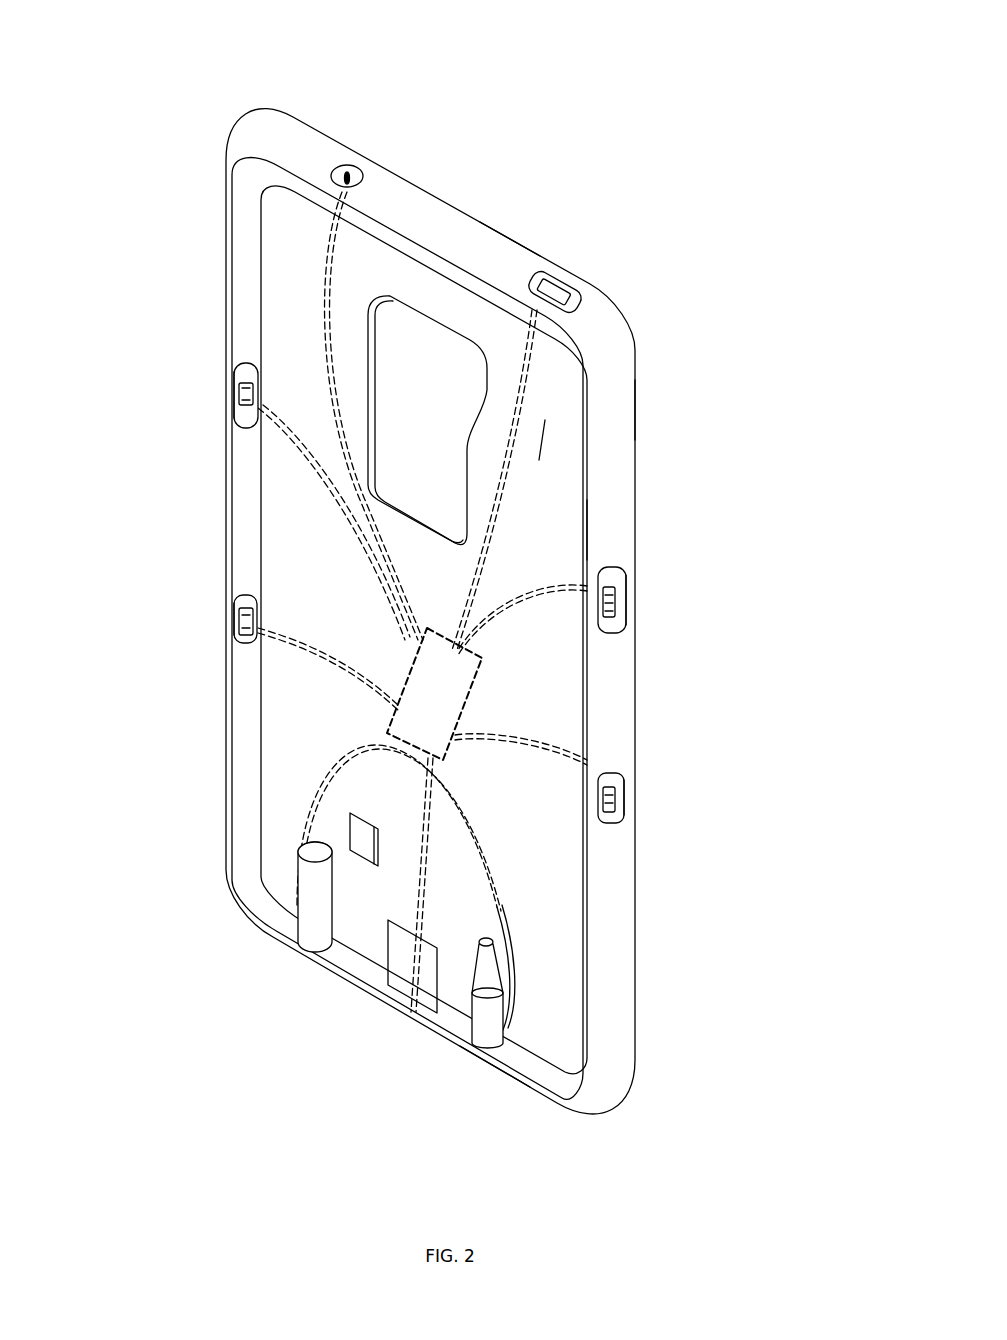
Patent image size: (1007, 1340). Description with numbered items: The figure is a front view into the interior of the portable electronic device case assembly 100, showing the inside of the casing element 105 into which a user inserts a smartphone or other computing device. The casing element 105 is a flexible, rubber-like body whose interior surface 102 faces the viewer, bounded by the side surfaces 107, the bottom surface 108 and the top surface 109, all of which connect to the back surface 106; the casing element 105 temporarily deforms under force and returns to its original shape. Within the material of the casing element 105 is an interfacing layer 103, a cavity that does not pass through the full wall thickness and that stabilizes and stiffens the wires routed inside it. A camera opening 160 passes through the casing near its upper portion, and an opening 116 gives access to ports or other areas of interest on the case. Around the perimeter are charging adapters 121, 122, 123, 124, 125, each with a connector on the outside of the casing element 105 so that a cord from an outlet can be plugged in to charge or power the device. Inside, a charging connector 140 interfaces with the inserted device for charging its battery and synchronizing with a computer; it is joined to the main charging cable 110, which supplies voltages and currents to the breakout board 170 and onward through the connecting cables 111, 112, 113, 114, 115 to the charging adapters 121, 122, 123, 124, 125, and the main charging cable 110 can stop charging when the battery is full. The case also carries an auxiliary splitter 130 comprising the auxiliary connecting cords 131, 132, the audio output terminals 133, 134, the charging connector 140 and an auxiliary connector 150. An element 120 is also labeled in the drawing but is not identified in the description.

The case assembly 100 is at (471, 584).
The interior surface 102 is at (295, 558).
The interfacing layer 103 is at (565, 534).
The casing element 105 is at (643, 467).
The back surface 106 is at (643, 405).
The side surfaces 107 is at (244, 290).
The bottom surface 108 is at (500, 1082).
The top surface 109 is at (518, 232).
The main charging cable 110 is at (420, 897).
The connecting cable 111 is at (530, 607).
The connecting cable 112 is at (275, 651).
The connecting cable 113 is at (558, 745).
The connecting cable 114 is at (349, 243).
The connecting cable 115 is at (280, 448).
The opening 116 is at (343, 168).
The antenna 120 is at (542, 427).
The charging adapter 121 is at (628, 600).
The charging adapter 122 is at (240, 625).
The charging adapter 123 is at (627, 793).
The charging adapter 124 is at (578, 288).
The charging adapter 125 is at (243, 402).
The auxiliary splitter 130 is at (296, 800).
The auxiliary connecting cord 131 is at (320, 257).
The auxiliary connecting cord 132 is at (290, 855).
The audio output terminal 133 is at (357, 163).
The audio output terminal 134 is at (290, 922).
The charging connector 140 is at (386, 1002).
The auxiliary connector 150 is at (460, 1037).
The camera opening 160 is at (395, 355).
The breakout board 170 is at (467, 678).